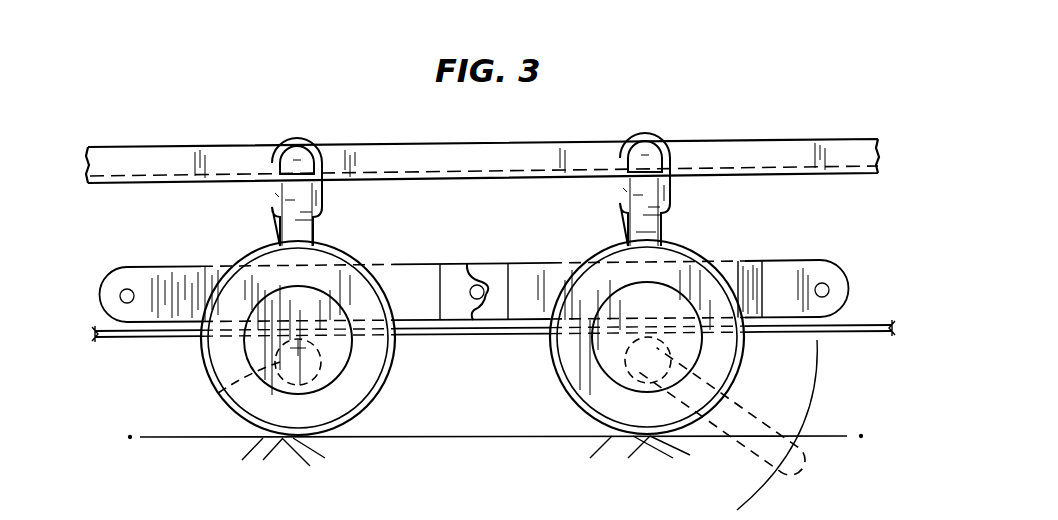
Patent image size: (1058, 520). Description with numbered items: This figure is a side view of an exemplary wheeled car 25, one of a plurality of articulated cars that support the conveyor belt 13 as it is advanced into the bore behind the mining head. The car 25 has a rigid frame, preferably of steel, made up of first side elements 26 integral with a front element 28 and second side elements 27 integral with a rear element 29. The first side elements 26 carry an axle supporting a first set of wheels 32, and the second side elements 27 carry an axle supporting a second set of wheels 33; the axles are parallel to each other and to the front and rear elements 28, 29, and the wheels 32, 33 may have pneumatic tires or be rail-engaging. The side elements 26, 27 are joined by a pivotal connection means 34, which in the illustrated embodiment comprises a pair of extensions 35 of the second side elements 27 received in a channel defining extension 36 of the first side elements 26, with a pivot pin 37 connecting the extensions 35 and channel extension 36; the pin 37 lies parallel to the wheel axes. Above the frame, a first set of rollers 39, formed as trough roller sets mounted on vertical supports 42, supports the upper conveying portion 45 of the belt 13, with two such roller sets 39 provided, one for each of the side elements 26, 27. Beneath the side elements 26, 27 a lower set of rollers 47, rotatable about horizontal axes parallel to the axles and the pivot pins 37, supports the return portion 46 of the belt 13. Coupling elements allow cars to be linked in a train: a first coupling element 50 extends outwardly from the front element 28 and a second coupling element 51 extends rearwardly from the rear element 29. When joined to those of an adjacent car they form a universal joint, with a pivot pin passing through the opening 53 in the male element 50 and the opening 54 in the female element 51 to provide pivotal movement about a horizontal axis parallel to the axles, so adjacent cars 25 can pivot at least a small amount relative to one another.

The conveyor belt 13 is at (821, 130).
The upper conveying portion 45 is at (237, 164).
The first set of rollers 39 is at (323, 205).
The vertical support 42 is at (652, 229).
The wheeled car 25 is at (161, 350).
The first coupling element 50 is at (132, 270).
The opening 53 is at (118, 299).
The front element 28 is at (219, 276).
The first side element 26 is at (412, 320).
The channel defining extension 36 is at (459, 276).
The second side element 27 is at (527, 321).
The pivot pin 37 is at (487, 288).
The pivotal connection means 34 is at (481, 253).
The extension 35 is at (492, 322).
The rear element 29 is at (746, 266).
The second coupling element 51 is at (805, 273).
The opening 54 is at (831, 292).
The return portion 46 is at (116, 338).
The first set of wheels 32 is at (372, 385).
The second set of wheels 33 is at (606, 395).
The lower set of rollers 47 is at (215, 392).